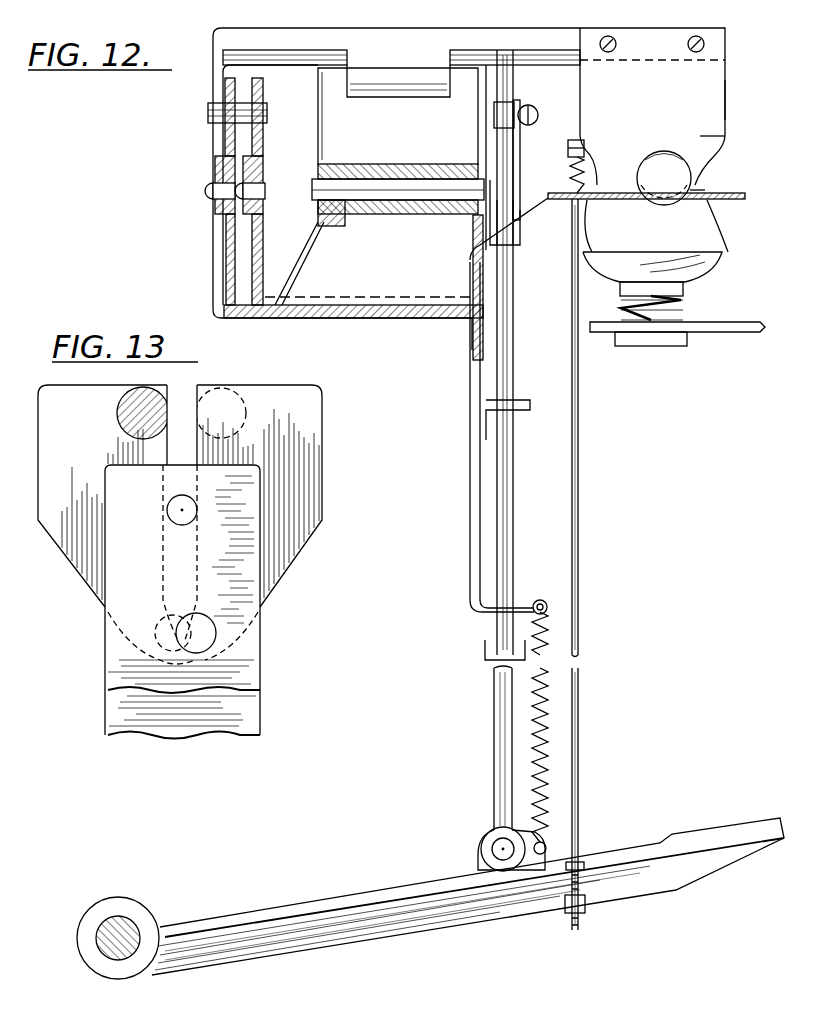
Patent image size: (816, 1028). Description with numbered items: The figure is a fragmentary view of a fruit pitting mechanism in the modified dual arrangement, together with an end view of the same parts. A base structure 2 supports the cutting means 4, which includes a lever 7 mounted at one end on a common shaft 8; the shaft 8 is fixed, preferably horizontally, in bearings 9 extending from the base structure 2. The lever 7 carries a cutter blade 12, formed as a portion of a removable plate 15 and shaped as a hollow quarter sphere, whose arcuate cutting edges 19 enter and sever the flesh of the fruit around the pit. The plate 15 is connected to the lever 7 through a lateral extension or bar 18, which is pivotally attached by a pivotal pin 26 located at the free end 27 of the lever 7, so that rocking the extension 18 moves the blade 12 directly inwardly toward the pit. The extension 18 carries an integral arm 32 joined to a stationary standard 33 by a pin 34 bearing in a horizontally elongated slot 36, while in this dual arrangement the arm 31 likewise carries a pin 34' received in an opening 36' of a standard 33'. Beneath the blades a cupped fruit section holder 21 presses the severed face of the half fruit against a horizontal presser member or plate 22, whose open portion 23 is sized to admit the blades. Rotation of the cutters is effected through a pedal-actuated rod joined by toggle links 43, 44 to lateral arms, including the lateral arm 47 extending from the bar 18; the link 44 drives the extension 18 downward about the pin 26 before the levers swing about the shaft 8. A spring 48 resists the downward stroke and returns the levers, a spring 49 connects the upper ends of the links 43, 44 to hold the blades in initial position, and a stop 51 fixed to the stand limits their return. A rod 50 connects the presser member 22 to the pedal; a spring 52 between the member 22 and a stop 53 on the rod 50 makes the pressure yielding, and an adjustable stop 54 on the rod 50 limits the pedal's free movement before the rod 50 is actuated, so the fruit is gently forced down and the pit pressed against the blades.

In FIG. 12, the base structure 2 is at (421, 325).
In FIG. 12, the cutting means 4 is at (735, 62).
In FIG. 12, the lever 7 is at (332, 115).
In FIG. 12, the shaft 8 is at (437, 196).
In FIG. 12, the bearings 9 is at (332, 228).
In FIG. 12, the cutter blade 12 is at (726, 101).
In FIG. 12, the removable plate 15 is at (703, 136).
In FIG. 12, the lateral extension or bar 18 is at (559, 51).
In FIG. 13, the lateral extension or bar 18 is at (167, 396).
In FIG. 12, the arcuate cutting edges 19 is at (668, 176).
In FIG. 12, the fruit section holder 21 is at (690, 270).
In FIG. 12, the presser member or plate 22 is at (744, 193).
In FIG. 12, the open portion 23 is at (655, 206).
In FIG. 12, the pivotal pin 26 is at (318, 80).
In FIG. 12, the free end 27 is at (458, 75).
In FIG. 12, the arm 31 is at (263, 163).
In FIG. 13, the arm 31 is at (62, 540).
In FIG. 12, the arm 32 is at (224, 89).
In FIG. 13, the arm 32 is at (312, 538).
In FIG. 12, the stationary standard 33 is at (192, 259).
In FIG. 13, the stationary standard 33 is at (152, 699).
In FIG. 12, the standard 33' is at (301, 259).
In FIG. 13, the standard 33' is at (152, 600).
In FIG. 12, the pin 34 is at (187, 186).
In FIG. 13, the pin 34 is at (199, 617).
In FIG. 12, the pin 34' is at (269, 179).
In FIG. 13, the pin 34' is at (158, 615).
In FIG. 12, the aperture or slot 36 is at (197, 196).
In FIG. 13, the aperture or slot 36 is at (265, 639).
In FIG. 12, the opening 36' is at (271, 192).
In FIG. 13, the opening 36' is at (126, 638).
In FIG. 12, the toggle link 43 is at (508, 180).
In FIG. 12, the toggle link 44 is at (514, 150).
In FIG. 12, the lateral arm 47 is at (508, 84).
In FIG. 12, the spring 48 is at (548, 690).
In FIG. 12, the spring 49 is at (526, 118).
In FIG. 12, the rod 50 is at (580, 601).
In FIG. 12, the stop 51 is at (208, 110).
In FIG. 13, the stop 51 is at (175, 510).
In FIG. 12, the spring 52 is at (583, 172).
In FIG. 12, the stop 53 is at (582, 152).
In FIG. 12, the stop 54 is at (587, 903).